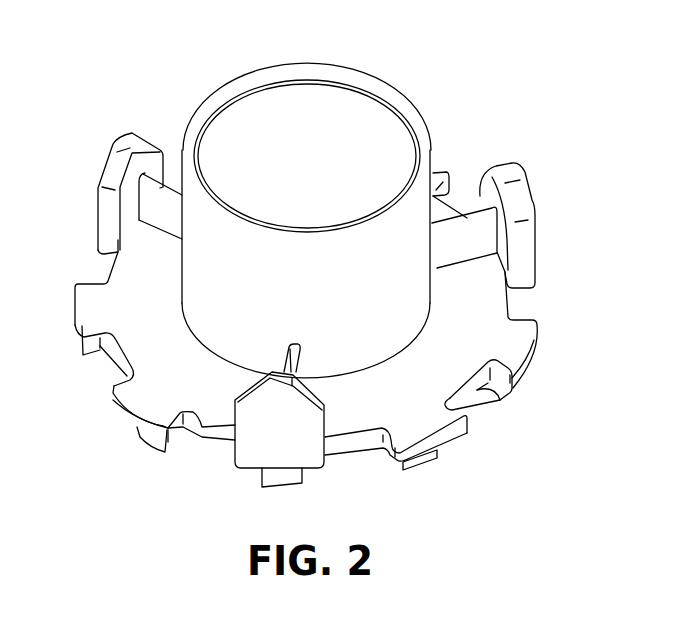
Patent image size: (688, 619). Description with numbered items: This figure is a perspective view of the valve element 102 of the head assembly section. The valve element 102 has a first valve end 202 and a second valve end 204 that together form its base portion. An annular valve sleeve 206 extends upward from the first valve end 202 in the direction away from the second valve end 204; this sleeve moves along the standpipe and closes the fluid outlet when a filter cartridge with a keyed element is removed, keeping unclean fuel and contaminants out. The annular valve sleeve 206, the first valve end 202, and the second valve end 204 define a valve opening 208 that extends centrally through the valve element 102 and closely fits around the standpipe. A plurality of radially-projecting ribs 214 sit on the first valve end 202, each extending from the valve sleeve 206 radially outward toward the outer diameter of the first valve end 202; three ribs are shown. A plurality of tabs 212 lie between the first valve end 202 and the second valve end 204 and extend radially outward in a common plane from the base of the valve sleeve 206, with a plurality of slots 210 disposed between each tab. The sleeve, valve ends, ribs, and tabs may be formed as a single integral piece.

The valve element 102 is at (430, 78).
The first valve end 202 is at (480, 303).
The second valve end 204 is at (467, 402).
The annular valve sleeve 206 is at (427, 127).
The valve opening 208 is at (257, 127).
The plurality of slots 210 is at (195, 457).
The plurality of tabs 212 is at (103, 424).
The plurality of radially-projecting ribs 214 is at (308, 450).